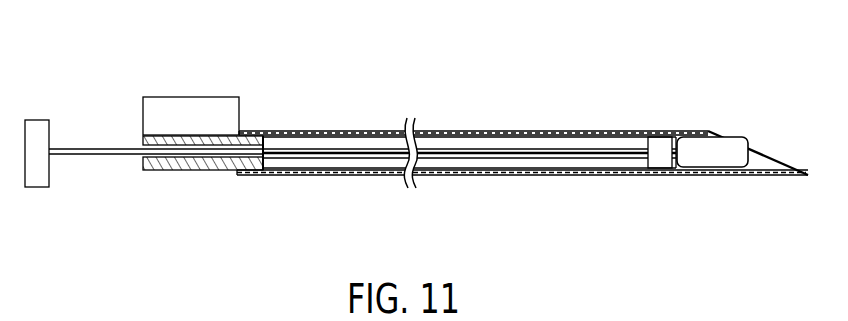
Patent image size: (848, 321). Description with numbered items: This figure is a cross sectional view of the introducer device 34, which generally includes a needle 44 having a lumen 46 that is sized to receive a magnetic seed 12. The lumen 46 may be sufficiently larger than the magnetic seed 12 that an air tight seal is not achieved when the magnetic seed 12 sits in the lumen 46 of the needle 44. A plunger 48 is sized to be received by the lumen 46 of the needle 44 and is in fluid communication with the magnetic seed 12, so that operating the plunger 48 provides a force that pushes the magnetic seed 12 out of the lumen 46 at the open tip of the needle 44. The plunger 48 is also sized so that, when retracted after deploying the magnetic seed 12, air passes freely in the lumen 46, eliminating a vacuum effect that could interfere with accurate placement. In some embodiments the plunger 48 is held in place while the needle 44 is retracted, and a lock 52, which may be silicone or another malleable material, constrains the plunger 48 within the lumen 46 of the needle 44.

The introducer device 34 is at (370, 70).
The lock 52 is at (143, 141).
The needle 44 is at (538, 130).
The lumen 46 is at (278, 162).
The plunger 48 is at (615, 160).
The magnetic seed 12 is at (749, 126).